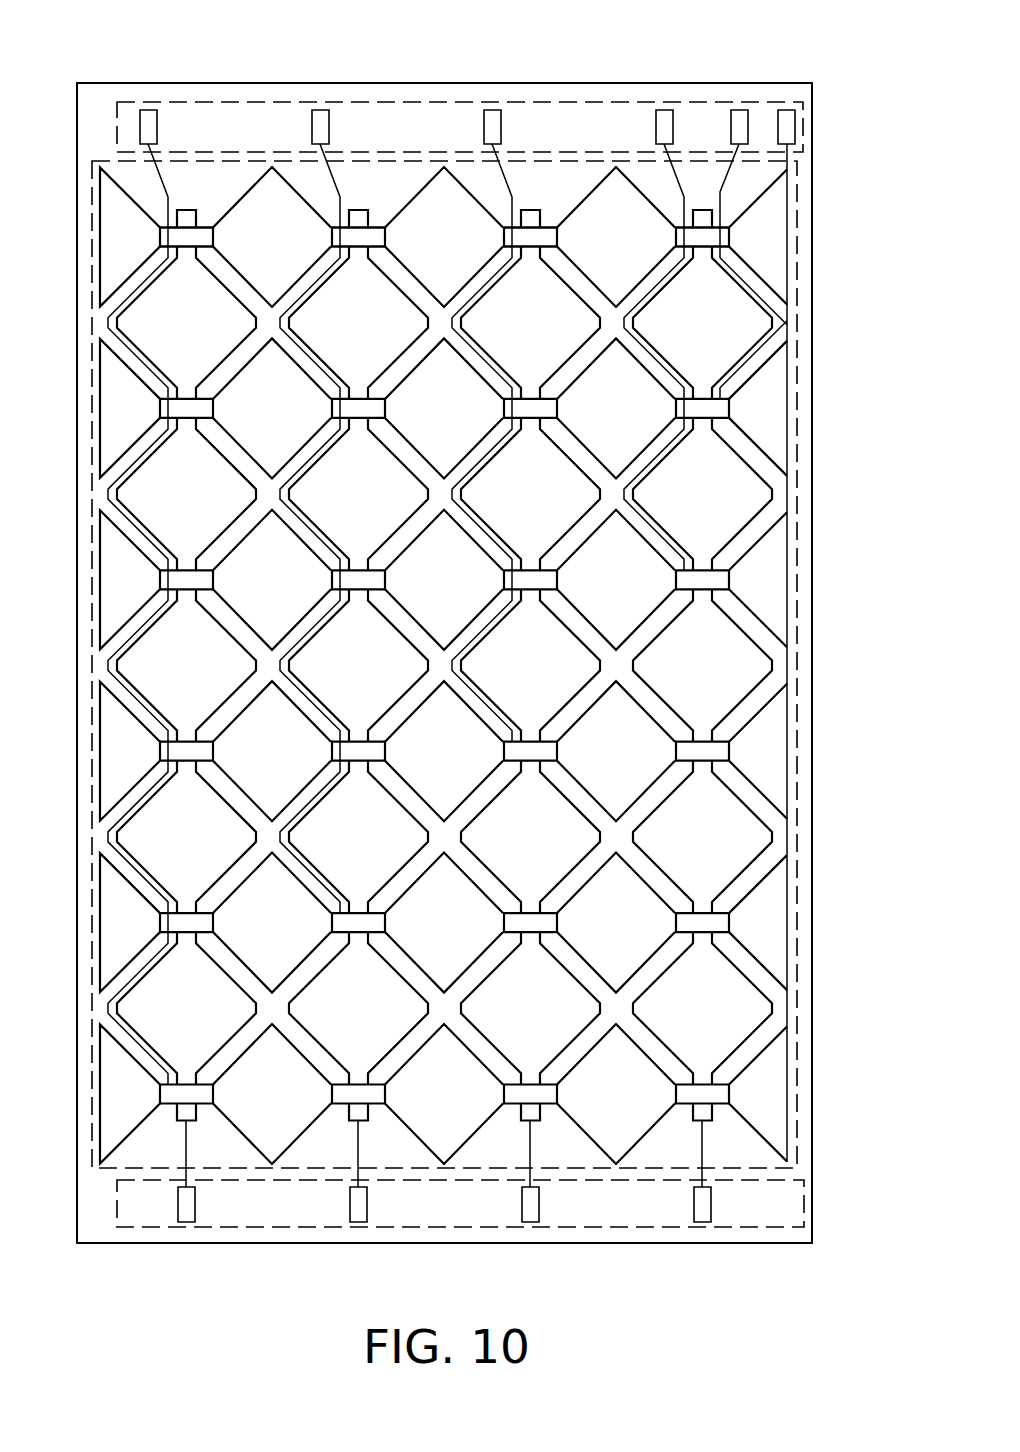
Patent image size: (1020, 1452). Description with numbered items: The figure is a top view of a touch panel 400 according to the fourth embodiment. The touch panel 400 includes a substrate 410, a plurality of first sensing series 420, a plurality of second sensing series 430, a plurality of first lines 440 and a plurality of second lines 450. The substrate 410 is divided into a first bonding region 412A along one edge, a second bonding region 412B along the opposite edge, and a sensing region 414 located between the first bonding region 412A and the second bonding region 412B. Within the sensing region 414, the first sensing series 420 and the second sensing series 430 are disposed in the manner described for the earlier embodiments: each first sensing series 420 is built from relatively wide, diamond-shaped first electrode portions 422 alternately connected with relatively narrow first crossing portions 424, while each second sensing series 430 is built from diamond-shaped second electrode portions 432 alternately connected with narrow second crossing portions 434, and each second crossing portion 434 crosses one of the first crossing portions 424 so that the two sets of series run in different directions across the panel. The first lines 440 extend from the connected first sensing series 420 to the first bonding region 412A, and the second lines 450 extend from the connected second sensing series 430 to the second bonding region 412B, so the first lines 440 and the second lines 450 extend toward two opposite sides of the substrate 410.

The touch panel 400 is at (454, 697).
The substrate 410 is at (800, 92).
The first bonding region 412A is at (805, 1203).
The second bonding region 412B is at (805, 127).
The sensing region 414 is at (797, 1100).
The first sensing series 420 is at (497, 574).
The first electrode portion 422 is at (752, 298).
The first crossing portion 424 is at (730, 397).
The second sensing series 430 is at (403, 603).
The second electrode portion 432 is at (245, 196).
The second crossing portion 434 is at (203, 228).
The first lines 440 is at (188, 1145).
The second lines 450 is at (168, 197).